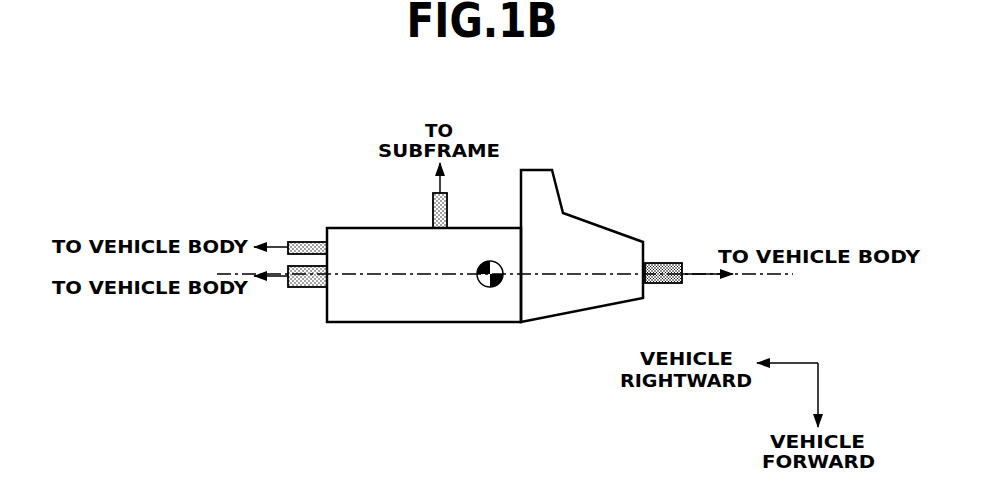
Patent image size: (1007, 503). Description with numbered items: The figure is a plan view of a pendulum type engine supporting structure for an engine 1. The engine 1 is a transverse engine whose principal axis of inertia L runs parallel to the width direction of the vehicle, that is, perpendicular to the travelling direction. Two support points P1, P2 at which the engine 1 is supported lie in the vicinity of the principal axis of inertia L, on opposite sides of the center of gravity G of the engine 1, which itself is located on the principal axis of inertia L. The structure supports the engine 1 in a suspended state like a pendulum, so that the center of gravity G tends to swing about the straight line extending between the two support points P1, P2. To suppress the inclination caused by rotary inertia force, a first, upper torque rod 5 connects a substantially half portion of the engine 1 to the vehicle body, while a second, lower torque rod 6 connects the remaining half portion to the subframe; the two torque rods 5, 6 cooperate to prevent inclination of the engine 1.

The engine 1 is at (385, 298).
The first torque rod (upper torque rod) 5 is at (311, 242).
The second torque rod (lower torque rod) 6 is at (433, 211).
The support point P1 is at (300, 288).
The support point P2 is at (663, 263).
The center of gravity G is at (490, 287).
The principal axis of inertia L is at (768, 278).